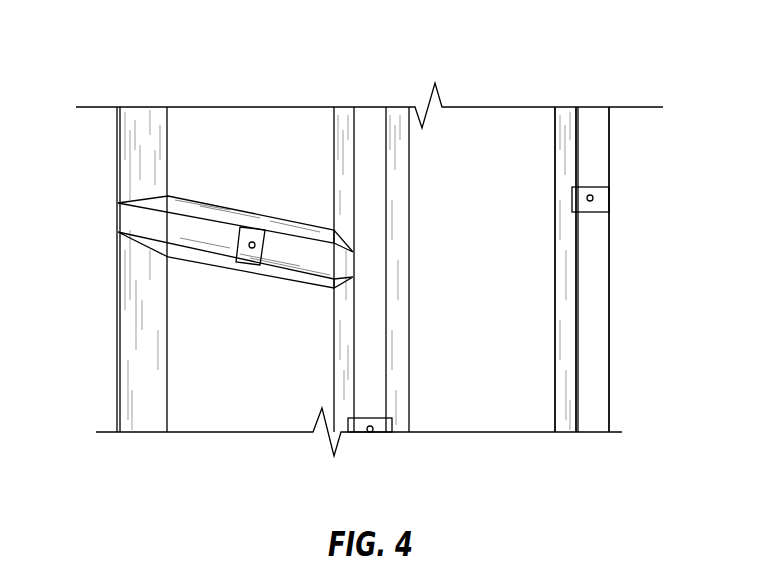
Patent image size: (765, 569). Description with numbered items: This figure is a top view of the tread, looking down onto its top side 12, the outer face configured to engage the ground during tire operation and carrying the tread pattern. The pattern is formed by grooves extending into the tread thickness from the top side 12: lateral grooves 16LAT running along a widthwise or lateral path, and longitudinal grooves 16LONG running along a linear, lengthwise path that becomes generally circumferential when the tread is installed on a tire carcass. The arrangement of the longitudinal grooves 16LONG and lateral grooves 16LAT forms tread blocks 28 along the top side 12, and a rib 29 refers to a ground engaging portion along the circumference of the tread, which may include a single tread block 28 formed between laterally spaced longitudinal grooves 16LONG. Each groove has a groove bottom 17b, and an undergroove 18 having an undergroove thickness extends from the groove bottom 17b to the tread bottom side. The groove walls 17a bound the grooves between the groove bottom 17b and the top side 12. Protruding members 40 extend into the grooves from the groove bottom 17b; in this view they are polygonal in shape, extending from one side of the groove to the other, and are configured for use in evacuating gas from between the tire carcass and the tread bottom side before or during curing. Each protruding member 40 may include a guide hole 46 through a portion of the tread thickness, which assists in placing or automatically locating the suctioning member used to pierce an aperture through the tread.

The top side 12 is at (286, 147).
The lateral groove 16LAT is at (143, 222).
The longitudinal groove 16LONG is at (618, 472).
The flange 17a is at (401, 165).
The groove bottom 17b is at (600, 322).
The undergroove 18 is at (605, 372).
The tread block 28 is at (192, 122).
The rib 29 is at (490, 90).
The protruding member 40 is at (246, 262).
The guide hole 46 is at (248, 228).